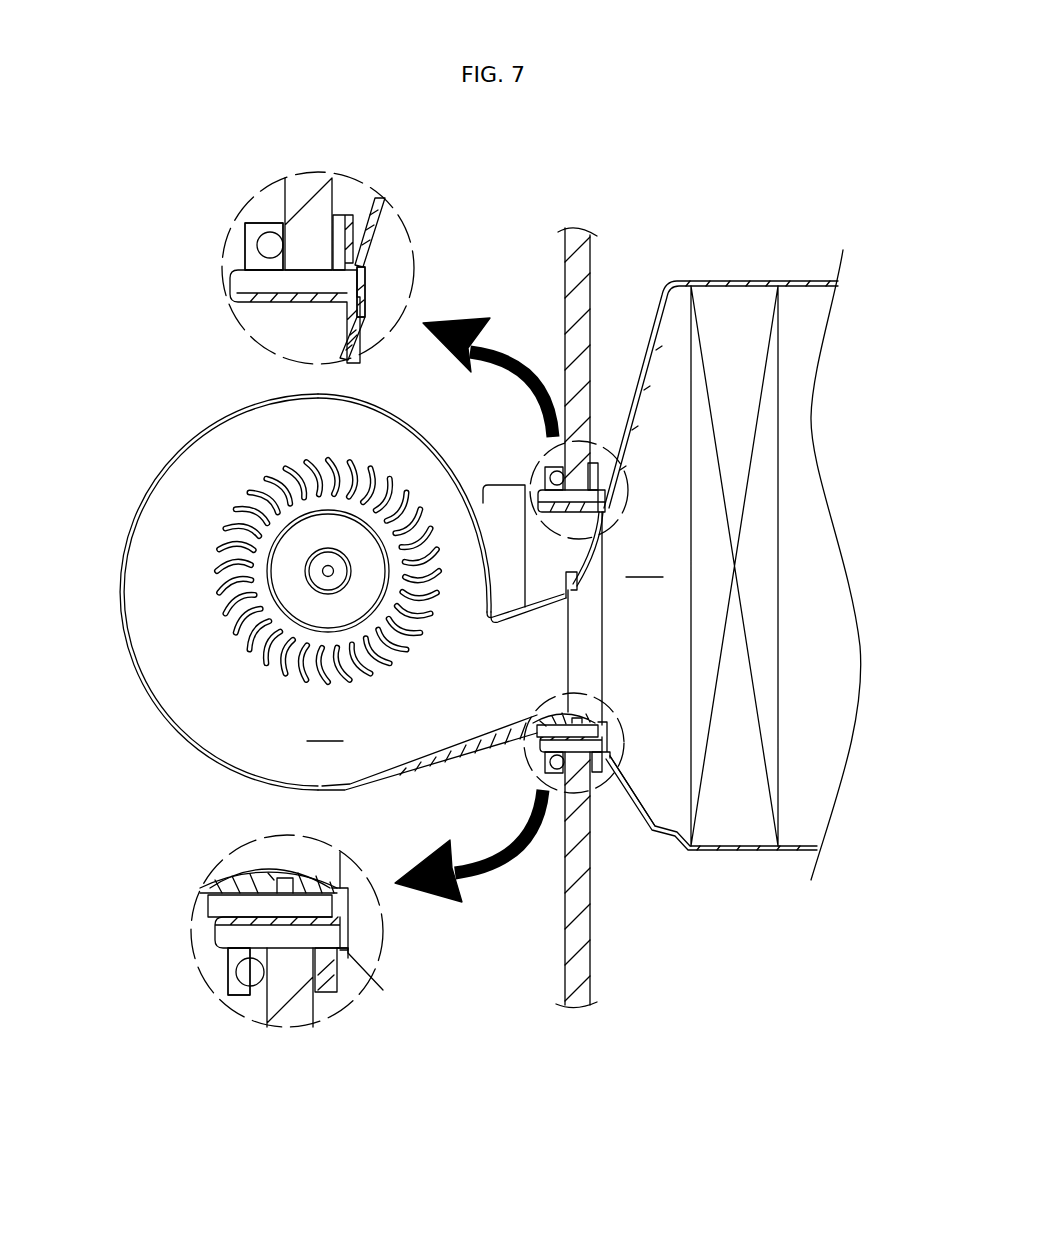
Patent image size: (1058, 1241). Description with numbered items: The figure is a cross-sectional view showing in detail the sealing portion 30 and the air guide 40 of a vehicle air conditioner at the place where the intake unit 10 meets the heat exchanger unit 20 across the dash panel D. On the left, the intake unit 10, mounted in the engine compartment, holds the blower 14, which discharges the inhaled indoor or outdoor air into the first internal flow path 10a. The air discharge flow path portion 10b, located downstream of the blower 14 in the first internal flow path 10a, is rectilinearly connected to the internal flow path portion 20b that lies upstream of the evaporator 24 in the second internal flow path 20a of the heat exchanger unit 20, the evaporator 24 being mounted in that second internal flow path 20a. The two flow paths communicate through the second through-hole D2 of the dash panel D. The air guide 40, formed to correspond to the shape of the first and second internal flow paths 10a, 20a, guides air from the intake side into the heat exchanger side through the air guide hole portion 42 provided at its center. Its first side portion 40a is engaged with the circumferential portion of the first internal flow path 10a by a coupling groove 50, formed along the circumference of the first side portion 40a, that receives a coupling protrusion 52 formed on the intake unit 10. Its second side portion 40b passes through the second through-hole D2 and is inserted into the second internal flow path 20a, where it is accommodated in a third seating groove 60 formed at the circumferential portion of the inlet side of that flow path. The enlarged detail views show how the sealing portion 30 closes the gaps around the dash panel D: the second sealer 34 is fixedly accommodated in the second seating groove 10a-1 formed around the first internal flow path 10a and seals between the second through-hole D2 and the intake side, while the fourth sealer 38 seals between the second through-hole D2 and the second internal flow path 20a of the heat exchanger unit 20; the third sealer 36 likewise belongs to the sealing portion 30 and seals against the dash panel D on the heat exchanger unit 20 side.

The intake unit 10 is at (354, 643).
The first internal flow path 10a is at (361, 592).
The second seating groove 10a-1 is at (243, 250).
The air discharge flow path portion 10b is at (415, 690).
The blower 14 is at (220, 612).
The heat exchanger unit 20 is at (763, 608).
The second internal flow path 20a is at (721, 429).
The internal flow path portion 20b is at (665, 630).
The evaporator 24 is at (751, 748).
The sealing portion 30 is at (381, 573).
The second sealer 34 is at (277, 233).
The third sealer 36 is at (612, 762).
The fourth sealer 38 is at (342, 225).
The air guide 40 is at (357, 615).
The first side portion 40a is at (208, 898).
The second side portion 40b is at (323, 928).
The air guide hole portion 42 is at (612, 760).
The coupling groove 50 is at (278, 878).
The coupling protrusion 52 is at (247, 873).
The third seating groove 60 is at (360, 257).
The dash panel D is at (593, 283).
The second through-hole D2 is at (658, 450).